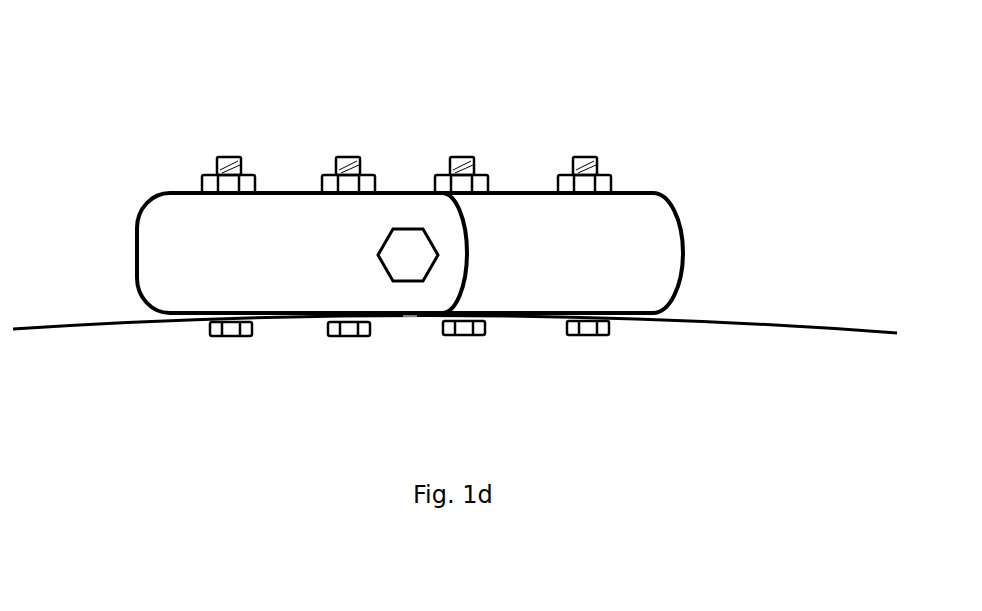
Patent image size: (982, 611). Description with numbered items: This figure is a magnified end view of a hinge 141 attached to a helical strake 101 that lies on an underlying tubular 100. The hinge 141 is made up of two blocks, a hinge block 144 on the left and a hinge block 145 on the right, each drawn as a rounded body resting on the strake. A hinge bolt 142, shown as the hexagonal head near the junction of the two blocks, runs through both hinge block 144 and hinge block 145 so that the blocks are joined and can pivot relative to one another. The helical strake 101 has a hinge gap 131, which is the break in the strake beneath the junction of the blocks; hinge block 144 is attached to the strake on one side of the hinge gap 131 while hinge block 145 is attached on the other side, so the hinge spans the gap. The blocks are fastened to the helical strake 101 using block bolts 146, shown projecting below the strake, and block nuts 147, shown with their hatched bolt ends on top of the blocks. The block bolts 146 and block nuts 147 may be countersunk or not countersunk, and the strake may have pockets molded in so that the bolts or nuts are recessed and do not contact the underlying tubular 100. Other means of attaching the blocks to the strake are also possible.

The underlying tubular 100 is at (455, 240).
The helical strake 101 is at (107, 325).
The hinge gap 131 is at (408, 320).
The hinge 141 is at (413, 240).
The hinge bolt 142 is at (411, 226).
The hinge block 144 is at (186, 190).
The hinge block 145 is at (655, 190).
The block bolts 146 is at (340, 338).
The block nuts 147 is at (322, 172).